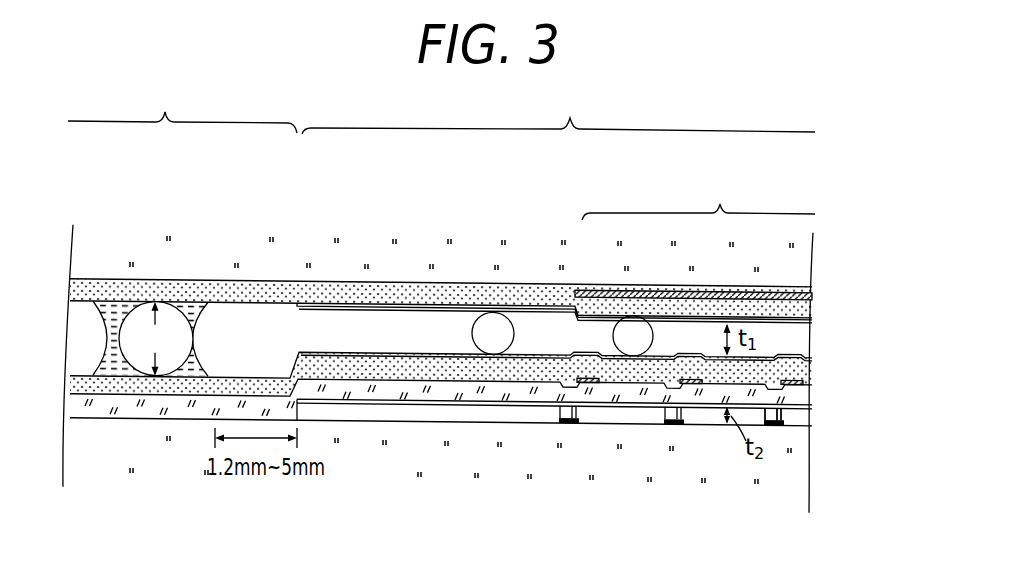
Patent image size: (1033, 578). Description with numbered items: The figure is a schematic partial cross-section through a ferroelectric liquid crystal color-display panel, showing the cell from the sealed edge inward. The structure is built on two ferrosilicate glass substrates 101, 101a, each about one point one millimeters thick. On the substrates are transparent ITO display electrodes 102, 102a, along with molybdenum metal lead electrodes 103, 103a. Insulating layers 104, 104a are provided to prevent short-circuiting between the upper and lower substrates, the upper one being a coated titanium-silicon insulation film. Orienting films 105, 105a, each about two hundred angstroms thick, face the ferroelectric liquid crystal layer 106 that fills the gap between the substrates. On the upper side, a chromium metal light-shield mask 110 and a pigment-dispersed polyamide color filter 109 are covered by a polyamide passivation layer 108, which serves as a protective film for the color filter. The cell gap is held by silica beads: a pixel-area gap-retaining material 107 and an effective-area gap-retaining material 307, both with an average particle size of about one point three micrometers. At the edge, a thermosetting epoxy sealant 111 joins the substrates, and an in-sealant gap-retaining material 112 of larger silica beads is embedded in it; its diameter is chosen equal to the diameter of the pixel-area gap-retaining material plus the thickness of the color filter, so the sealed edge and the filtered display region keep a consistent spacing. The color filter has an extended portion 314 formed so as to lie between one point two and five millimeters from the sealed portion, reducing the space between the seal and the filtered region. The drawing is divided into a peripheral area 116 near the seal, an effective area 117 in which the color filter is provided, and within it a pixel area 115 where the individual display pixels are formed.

The glass substrate 101 is at (814, 240).
The display electrode 102 is at (813, 289).
The metal lead electrode 103 is at (813, 298).
The insulating layer 104 is at (813, 307).
The orienting film 105 is at (813, 320).
The liquid crystal layer 106 is at (800, 348).
The orienting film 105a is at (800, 371).
The insulating layer 104a is at (787, 387).
The metal lead electrode 103a is at (790, 397).
The display electrode 102a is at (780, 406).
The passivation layer 108 is at (790, 418).
The color filter 109 is at (797, 421).
The metal light-shield mask 110 is at (776, 430).
The glass substrate 101a is at (733, 465).
The sealant 111 is at (111, 372).
The in-sealant gap-retaining material 112 is at (143, 362).
The pixel-area gap-retaining material 107 is at (633, 350).
The effective-area gap-retaining material 307 is at (493, 350).
The extended portion of the color filter 314 is at (462, 415).
The pixel area 115 is at (698, 211).
The peripheral area 116 is at (182, 124).
The effective area 117 is at (558, 129).